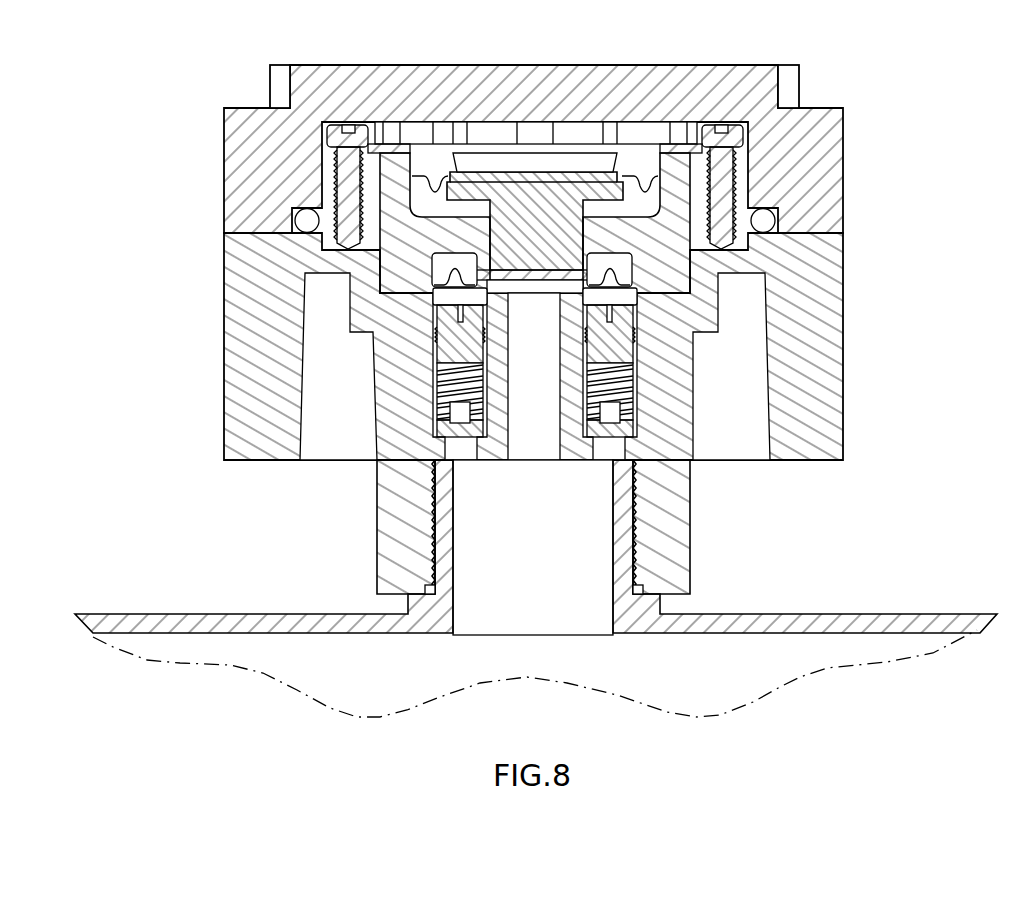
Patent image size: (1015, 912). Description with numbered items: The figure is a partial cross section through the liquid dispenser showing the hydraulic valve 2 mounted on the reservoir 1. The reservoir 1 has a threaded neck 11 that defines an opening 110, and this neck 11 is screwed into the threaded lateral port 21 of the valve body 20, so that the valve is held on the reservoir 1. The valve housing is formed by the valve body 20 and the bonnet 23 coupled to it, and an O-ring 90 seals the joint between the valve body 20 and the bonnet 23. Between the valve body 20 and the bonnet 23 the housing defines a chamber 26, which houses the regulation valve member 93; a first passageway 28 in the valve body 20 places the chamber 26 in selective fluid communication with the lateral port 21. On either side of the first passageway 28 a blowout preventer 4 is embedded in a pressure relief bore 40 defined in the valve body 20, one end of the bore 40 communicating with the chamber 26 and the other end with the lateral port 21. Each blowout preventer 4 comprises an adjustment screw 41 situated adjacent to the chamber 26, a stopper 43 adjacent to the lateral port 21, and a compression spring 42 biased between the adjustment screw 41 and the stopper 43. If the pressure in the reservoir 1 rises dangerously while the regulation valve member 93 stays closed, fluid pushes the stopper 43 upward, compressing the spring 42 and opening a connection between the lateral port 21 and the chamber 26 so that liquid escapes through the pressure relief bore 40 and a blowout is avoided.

The reservoir 1 is at (910, 620).
The hydraulic valve 2 is at (609, 262).
The blowout preventer 4 is at (299, 416).
The neck 11 is at (447, 492).
The valve body 20 is at (585, 346).
The lateral port 21 is at (630, 545).
The bonnet 23 is at (834, 178).
The chamber 26 is at (407, 236).
The first passageway 28 is at (533, 433).
The pressure relief bore 40 is at (632, 397).
The adjustment screw 41 is at (437, 347).
The compression spring 42 is at (437, 393).
The stopper 43 is at (453, 430).
The O-ring 90 is at (300, 218).
The regulation valve member 93 is at (540, 215).
The opening 110 is at (468, 522).